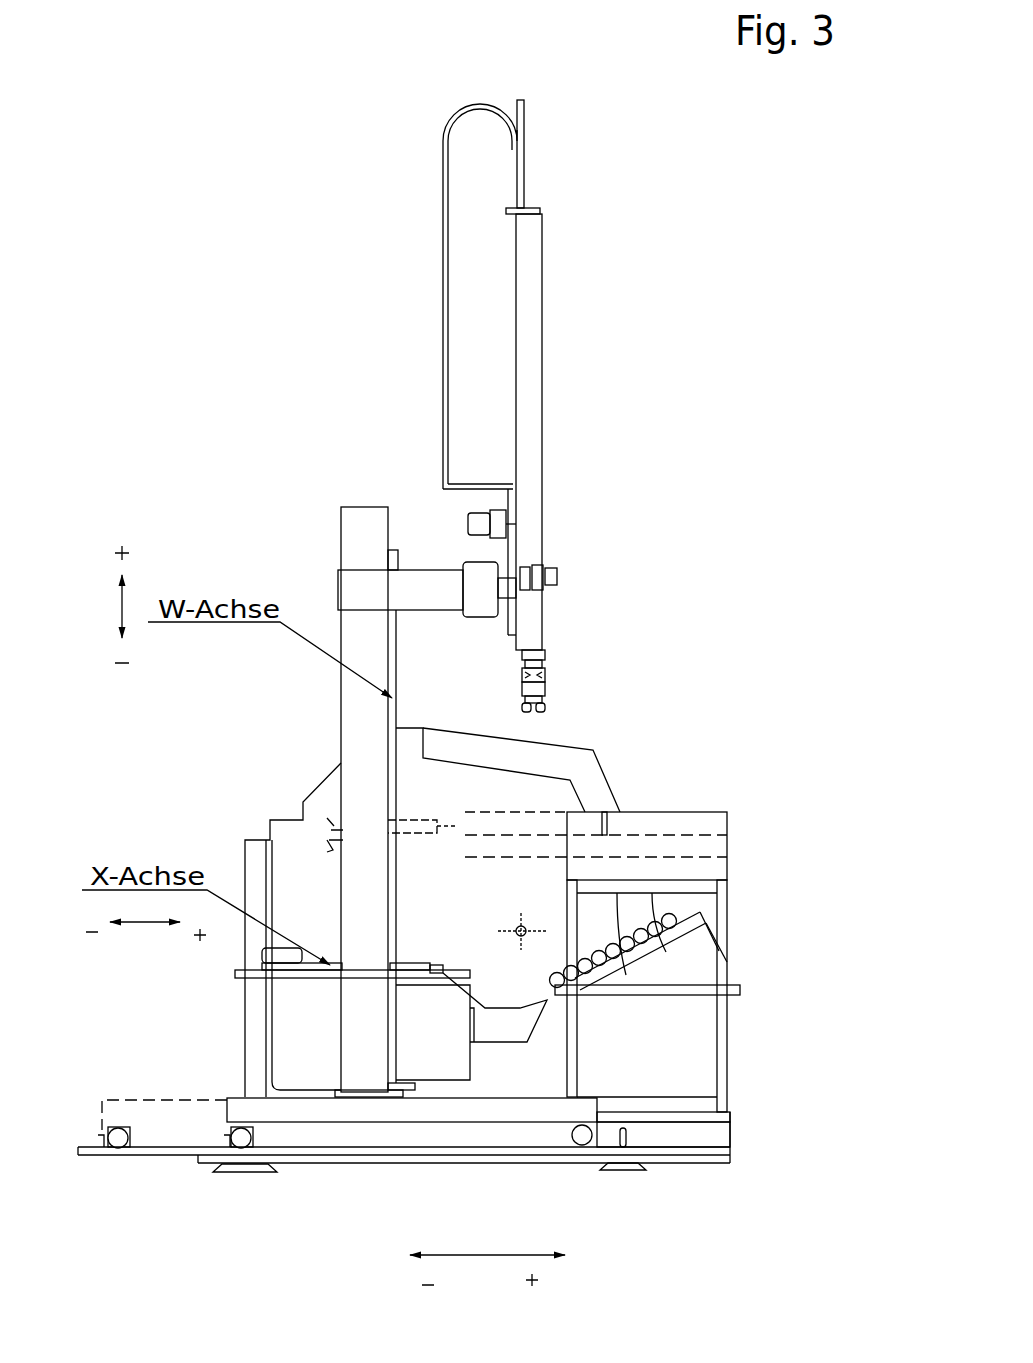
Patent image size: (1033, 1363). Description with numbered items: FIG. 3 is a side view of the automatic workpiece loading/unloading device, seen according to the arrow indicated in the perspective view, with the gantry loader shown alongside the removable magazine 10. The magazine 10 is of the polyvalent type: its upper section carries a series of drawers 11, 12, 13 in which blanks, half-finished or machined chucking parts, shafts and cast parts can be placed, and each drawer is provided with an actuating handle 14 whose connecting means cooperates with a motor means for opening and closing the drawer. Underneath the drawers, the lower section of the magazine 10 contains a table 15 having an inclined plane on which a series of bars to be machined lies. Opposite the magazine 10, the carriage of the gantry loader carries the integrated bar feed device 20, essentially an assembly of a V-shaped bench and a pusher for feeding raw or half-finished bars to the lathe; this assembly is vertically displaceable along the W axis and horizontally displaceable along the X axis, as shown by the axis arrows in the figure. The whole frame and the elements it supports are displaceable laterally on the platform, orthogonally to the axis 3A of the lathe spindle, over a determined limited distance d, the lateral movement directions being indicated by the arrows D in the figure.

The axis of the spindle 3A is at (521, 931).
The magazine 10 is at (706, 1014).
The drawer 11 is at (712, 823).
The drawer 12 is at (712, 847).
The drawer 13 is at (712, 868).
The actuating handle 14 is at (455, 822).
The table having an inclined plane 15 is at (613, 967).
The bar feed device 20 is at (504, 1046).
The determined limited distance d is at (170, 1132).
The lateral displacement directions D is at (488, 1258).